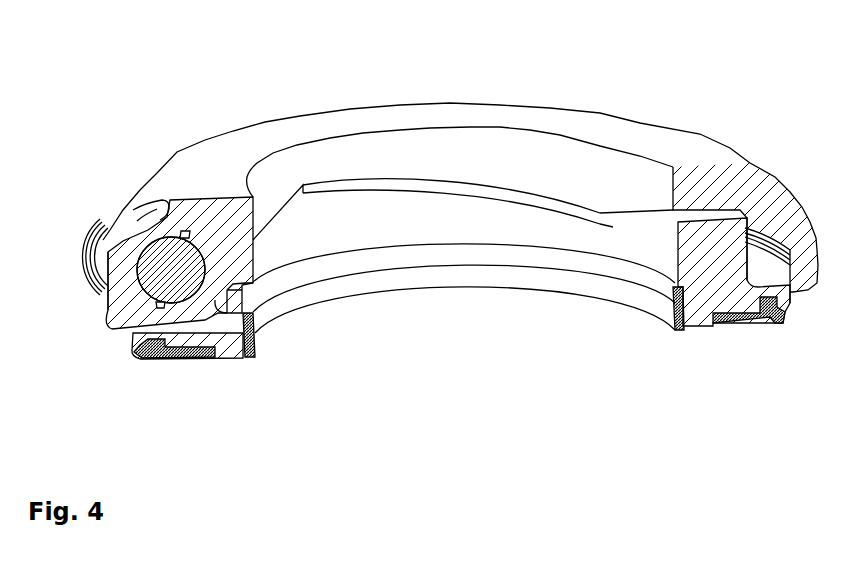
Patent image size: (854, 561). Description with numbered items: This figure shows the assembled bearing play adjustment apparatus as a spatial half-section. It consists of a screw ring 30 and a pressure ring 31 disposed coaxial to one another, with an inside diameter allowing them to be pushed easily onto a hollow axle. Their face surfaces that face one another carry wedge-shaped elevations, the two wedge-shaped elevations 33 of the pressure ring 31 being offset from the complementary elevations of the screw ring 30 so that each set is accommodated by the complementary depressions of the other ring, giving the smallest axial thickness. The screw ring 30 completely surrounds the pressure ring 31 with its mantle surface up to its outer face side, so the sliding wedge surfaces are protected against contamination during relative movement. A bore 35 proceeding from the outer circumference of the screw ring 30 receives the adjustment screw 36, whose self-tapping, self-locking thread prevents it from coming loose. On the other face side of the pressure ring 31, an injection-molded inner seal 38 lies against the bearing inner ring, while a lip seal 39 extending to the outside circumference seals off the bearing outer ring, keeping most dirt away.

The screw ring 30 is at (463, 117).
The pressure ring 31 is at (333, 285).
The wedge-shaped elevations of the pressure ring 33 is at (332, 190).
The bore 35 is at (172, 268).
The adjustment screw 36 is at (96, 232).
The inner seal 38 is at (252, 355).
The lip seal 39 is at (183, 350).